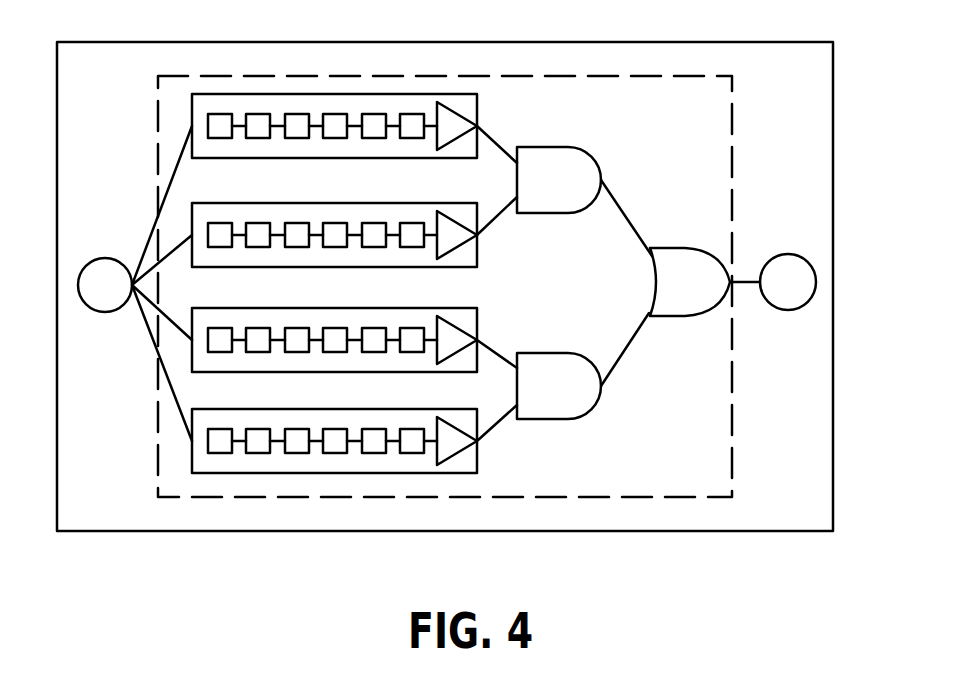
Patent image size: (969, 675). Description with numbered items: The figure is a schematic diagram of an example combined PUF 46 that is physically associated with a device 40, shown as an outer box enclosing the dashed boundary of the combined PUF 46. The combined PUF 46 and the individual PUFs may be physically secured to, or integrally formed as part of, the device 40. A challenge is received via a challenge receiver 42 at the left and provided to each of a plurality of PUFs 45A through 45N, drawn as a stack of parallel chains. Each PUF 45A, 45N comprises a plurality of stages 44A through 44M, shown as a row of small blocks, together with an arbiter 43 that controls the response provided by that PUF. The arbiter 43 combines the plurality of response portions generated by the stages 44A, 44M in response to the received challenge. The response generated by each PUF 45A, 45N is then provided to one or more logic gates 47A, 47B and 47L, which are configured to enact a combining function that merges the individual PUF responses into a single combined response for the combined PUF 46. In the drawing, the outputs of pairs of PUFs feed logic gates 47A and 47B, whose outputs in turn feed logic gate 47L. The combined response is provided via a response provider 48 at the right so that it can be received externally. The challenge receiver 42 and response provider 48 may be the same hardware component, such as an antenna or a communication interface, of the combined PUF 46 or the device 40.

The device 40 is at (833, 115).
The challenge receiver 42 is at (103, 258).
The arbiter 43 is at (437, 102).
The stage 44A is at (220, 138).
The stage 44M is at (410, 138).
The PUF 45A is at (323, 94).
The PUF 45N is at (230, 473).
The combined PUF 46 is at (610, 497).
The logic gate 47A is at (555, 173).
The logic gate 47B is at (545, 378).
The logic gate 47L is at (685, 260).
The response provider 48 is at (805, 256).